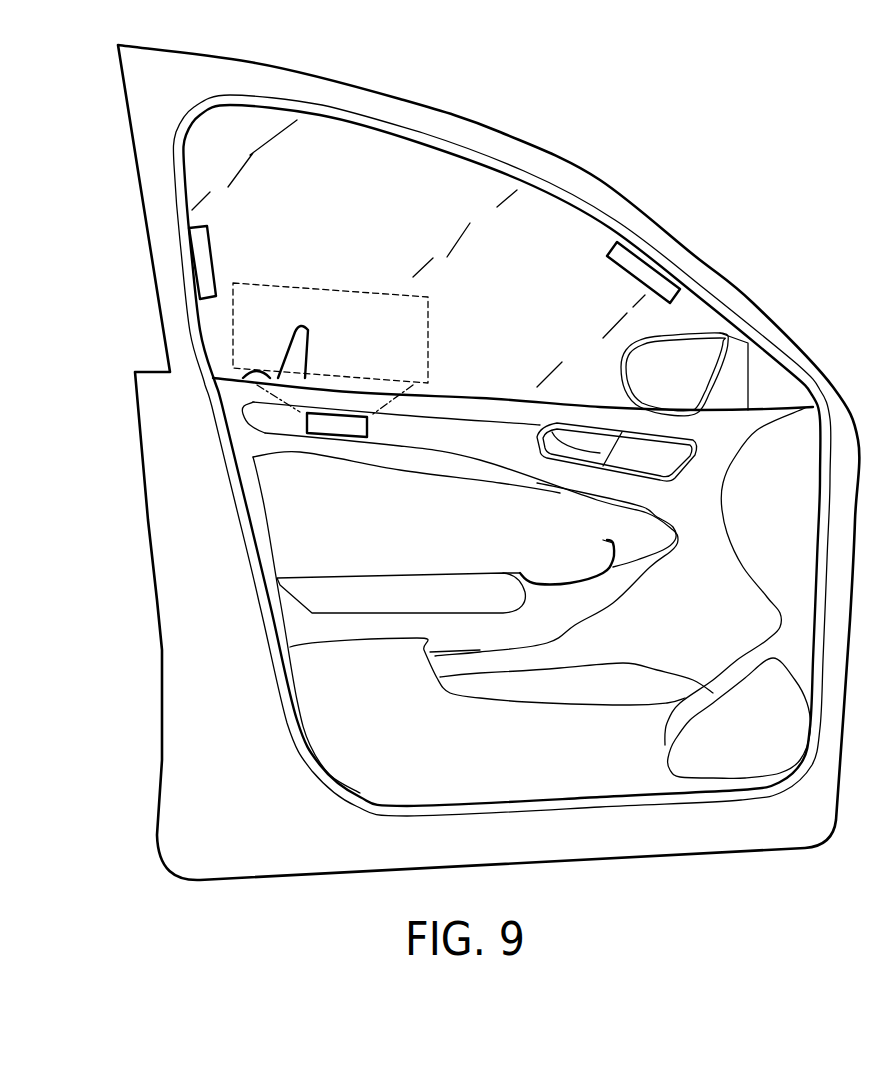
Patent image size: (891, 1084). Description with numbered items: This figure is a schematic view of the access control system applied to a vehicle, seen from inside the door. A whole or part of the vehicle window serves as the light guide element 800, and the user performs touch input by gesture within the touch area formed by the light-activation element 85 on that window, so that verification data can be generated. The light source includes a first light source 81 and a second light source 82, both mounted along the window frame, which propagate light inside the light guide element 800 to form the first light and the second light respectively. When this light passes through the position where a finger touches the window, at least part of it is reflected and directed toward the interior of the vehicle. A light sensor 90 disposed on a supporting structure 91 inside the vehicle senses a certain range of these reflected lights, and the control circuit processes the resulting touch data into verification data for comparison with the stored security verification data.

The light guide element 800 is at (551, 226).
The first light source 81 is at (202, 266).
The second light source 82 is at (643, 270).
The light-activation element 85 is at (428, 317).
The light sensor 90 is at (333, 428).
The supporting structure 91 is at (457, 438).